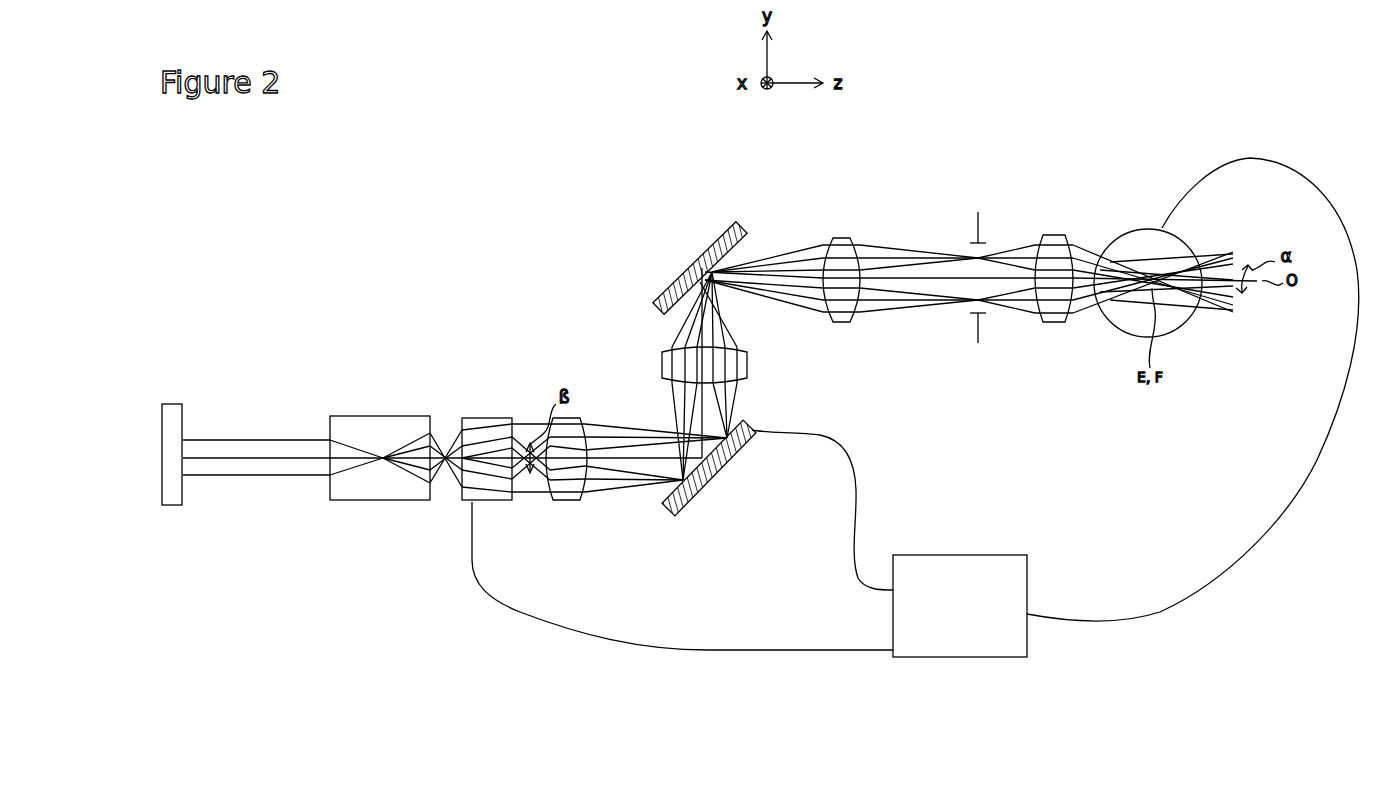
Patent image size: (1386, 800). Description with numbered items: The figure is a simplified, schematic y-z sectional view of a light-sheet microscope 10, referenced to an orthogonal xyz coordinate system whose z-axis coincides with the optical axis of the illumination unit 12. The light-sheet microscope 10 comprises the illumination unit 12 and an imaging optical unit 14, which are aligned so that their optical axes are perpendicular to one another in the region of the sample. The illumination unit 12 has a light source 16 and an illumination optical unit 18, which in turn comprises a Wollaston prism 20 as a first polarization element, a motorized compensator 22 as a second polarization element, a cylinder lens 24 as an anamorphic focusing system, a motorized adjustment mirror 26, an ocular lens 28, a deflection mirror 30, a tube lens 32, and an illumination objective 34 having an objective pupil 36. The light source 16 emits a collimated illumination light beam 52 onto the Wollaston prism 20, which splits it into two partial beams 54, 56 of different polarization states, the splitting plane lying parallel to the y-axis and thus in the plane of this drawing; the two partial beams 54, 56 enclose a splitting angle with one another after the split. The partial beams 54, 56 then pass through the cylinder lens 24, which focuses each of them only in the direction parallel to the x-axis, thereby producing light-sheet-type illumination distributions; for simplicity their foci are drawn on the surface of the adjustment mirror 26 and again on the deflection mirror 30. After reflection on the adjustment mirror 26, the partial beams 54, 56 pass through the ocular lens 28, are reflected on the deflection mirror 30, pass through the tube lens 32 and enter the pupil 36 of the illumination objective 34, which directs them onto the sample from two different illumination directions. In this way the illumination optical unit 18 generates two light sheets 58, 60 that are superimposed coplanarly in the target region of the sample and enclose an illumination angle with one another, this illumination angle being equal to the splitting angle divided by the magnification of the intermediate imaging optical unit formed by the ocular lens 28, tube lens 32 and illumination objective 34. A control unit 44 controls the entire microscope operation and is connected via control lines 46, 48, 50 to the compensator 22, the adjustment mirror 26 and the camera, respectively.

The light-sheet microscope 10 is at (326, 253).
The illumination unit 12 is at (620, 224).
The imaging optical unit 14 is at (1158, 218).
The light source 16 is at (172, 403).
The illumination optical unit 18 is at (891, 192).
The Wollaston prism 20 is at (358, 500).
The motorized compensator 22 is at (505, 500).
The cylinder lens 24 is at (567, 500).
The motorized adjustment mirror 26 is at (698, 494).
The ocular lens 28 is at (750, 362).
The deflection mirror 30 is at (702, 256).
The tube lens 32 is at (835, 240).
The illumination objective 34 is at (1048, 322).
The objective pupil 36 is at (980, 212).
The control unit 44 is at (945, 657).
The control line 46 is at (578, 628).
The control line 48 is at (853, 466).
The control line 50 is at (1233, 563).
The illumination light beam 52 is at (250, 432).
The partial beam 54 is at (440, 433).
The partial beam 56 is at (444, 488).
The light sheet 58 is at (1187, 311).
The light sheet 60 is at (1187, 246).